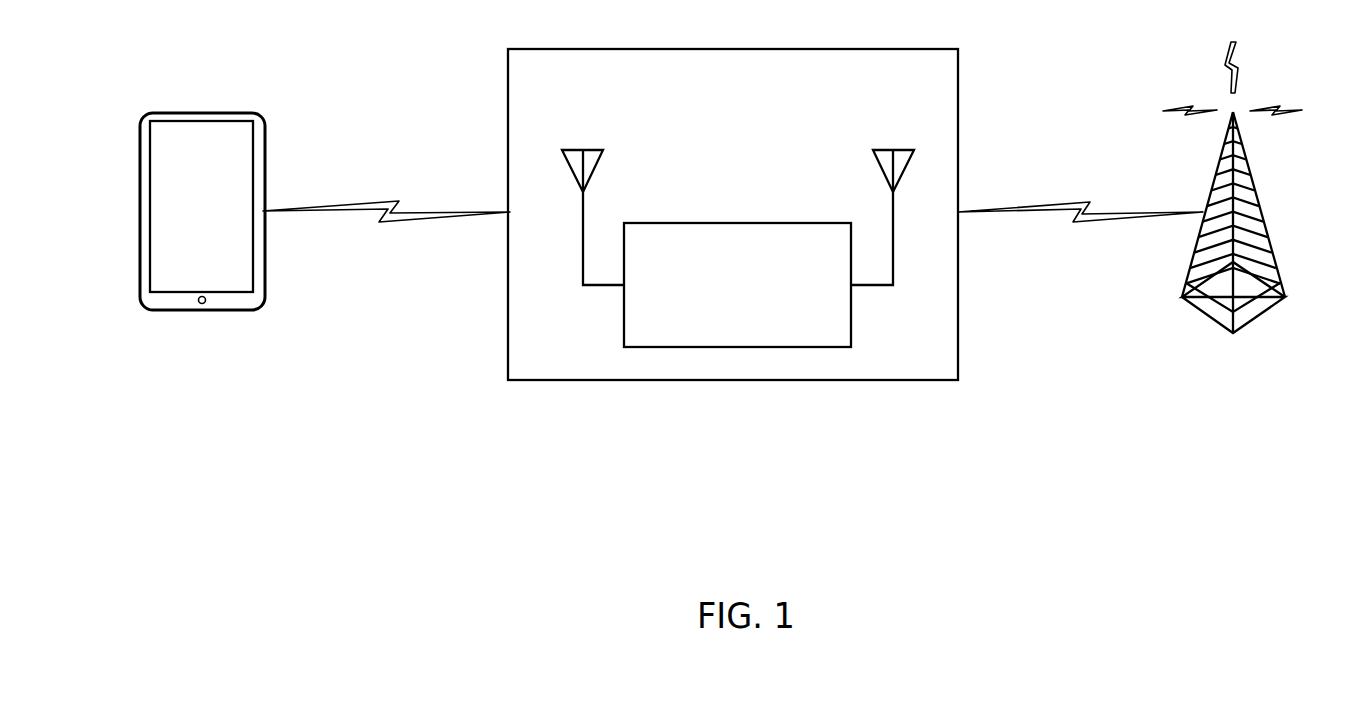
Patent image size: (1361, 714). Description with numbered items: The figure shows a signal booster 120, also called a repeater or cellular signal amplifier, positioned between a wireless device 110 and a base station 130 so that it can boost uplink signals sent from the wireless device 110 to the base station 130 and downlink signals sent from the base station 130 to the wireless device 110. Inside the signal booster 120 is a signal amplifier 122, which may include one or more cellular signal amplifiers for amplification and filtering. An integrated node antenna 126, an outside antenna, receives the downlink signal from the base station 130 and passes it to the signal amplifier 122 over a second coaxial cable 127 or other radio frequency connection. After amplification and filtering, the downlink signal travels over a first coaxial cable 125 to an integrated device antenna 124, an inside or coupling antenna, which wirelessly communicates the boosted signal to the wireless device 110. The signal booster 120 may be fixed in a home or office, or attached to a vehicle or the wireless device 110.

The wireless device 110 is at (198, 113).
The signal booster 120 is at (850, 87).
The signal amplifier 122 is at (757, 312).
The integrated device antenna 124 is at (582, 157).
The first coaxial cable 125 is at (574, 238).
The integrated node antenna 126 is at (893, 157).
The second coaxial cable 127 is at (896, 238).
The base station 130 is at (1252, 170).